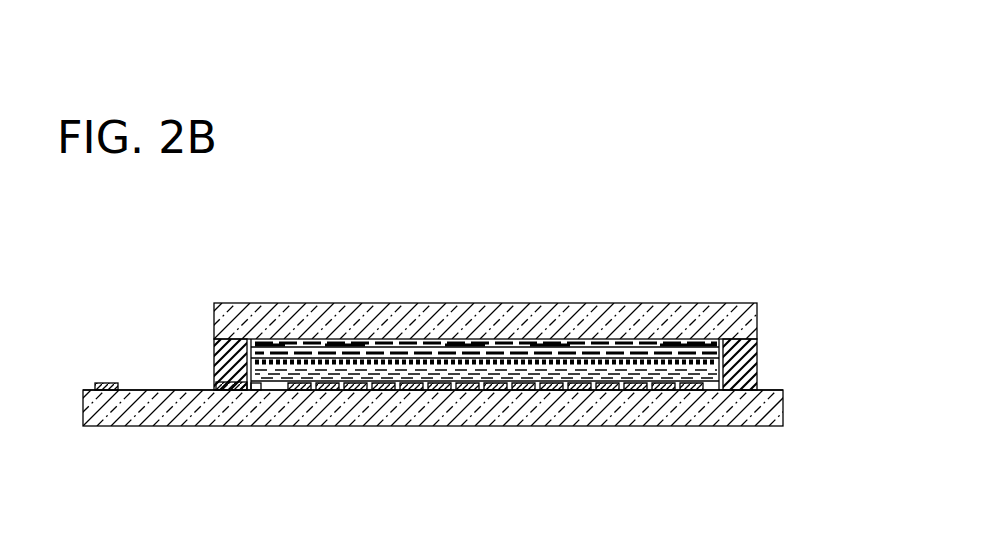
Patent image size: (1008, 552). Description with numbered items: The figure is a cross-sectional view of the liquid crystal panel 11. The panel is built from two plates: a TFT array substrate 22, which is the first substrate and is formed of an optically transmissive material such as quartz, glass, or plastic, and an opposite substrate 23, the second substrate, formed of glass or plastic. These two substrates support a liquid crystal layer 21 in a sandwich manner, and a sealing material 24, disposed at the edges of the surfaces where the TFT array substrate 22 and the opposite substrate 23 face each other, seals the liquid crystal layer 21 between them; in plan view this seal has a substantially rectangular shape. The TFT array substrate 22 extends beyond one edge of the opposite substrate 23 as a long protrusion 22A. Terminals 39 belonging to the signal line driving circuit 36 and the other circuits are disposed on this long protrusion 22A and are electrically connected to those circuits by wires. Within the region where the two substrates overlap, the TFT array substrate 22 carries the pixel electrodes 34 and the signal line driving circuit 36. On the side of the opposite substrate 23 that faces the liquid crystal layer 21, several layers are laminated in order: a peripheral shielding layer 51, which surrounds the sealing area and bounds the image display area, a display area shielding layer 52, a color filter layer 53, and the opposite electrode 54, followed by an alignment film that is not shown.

The liquid crystal panel 11 is at (824, 252).
The liquid crystal layer 21 is at (745, 373).
The TFT array substrate 22 is at (783, 410).
The long protrusion 22A is at (131, 389).
The opposite substrate 23 is at (757, 320).
The sealing material 24 is at (214, 347).
The pixel electrodes 34 is at (412, 391).
The signal line driving circuit 36 is at (233, 391).
The terminals 39 is at (104, 383).
The peripheral shielding layer 51 is at (263, 347).
The display area shielding layer 52 is at (357, 347).
The color filter layer 53 is at (466, 347).
The opposite electrode 54 is at (550, 347).